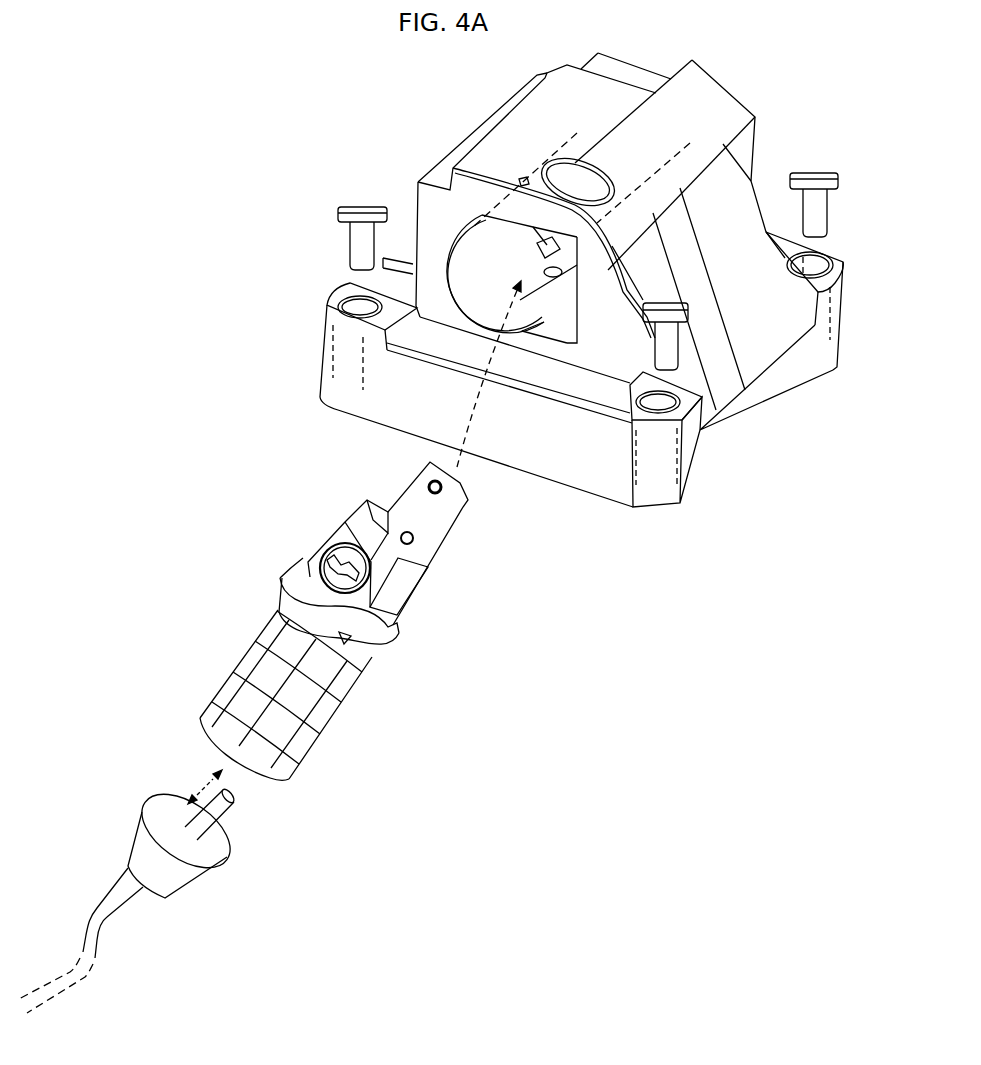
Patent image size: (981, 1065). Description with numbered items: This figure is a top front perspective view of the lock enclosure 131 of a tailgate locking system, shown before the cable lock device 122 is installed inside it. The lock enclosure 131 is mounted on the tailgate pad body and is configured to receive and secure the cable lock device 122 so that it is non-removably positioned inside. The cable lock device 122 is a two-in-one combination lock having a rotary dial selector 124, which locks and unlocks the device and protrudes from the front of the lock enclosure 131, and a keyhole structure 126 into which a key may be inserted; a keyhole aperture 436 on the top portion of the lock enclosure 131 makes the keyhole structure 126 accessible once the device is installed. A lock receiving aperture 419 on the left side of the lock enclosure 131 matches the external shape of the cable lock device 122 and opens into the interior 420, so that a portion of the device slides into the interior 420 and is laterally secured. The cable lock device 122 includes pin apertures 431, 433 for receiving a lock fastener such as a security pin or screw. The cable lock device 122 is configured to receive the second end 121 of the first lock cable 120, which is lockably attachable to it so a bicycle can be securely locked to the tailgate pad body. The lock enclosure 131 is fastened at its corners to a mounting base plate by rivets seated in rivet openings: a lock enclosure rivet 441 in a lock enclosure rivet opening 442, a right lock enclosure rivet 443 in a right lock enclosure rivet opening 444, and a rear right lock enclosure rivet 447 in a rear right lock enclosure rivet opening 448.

The lock enclosure 131 is at (376, 146).
The keyhole aperture 436 is at (593, 178).
The rear right lock enclosure rivet 447 is at (833, 220).
The lock enclosure rivet 441 is at (342, 248).
The interior 420 is at (508, 232).
The lock receiving aperture 419 is at (568, 339).
The right lock enclosure rivet 443 is at (688, 342).
The rear right lock enclosure rivet opening 448 is at (850, 312).
The lock enclosure rivet opening 442 is at (323, 350).
The right lock enclosure rivet opening 444 is at (707, 435).
The pin aperture 431 is at (430, 480).
The keyhole structure 126 is at (346, 545).
The pin aperture 433 is at (413, 542).
The cable lock device 122 is at (246, 543).
The rotary dial selector 124 is at (255, 642).
The second end 121 is at (166, 803).
The first lock cable 120 is at (95, 903).